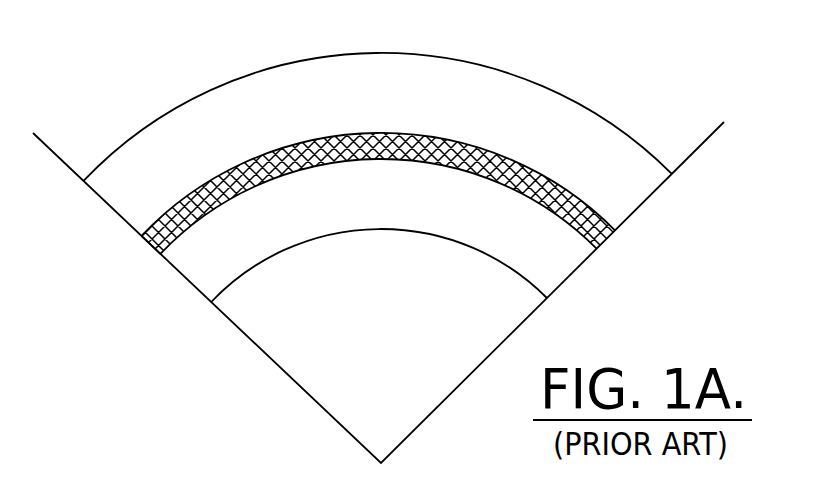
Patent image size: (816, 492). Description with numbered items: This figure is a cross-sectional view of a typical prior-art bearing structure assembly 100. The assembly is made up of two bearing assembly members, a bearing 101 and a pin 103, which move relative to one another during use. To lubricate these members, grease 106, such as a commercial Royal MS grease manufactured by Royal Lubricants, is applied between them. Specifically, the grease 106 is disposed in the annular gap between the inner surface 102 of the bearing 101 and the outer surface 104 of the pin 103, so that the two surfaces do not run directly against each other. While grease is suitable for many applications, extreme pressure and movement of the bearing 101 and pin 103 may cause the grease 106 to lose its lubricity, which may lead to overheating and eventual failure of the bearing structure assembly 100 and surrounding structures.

The bearing structure assembly 100 is at (378, 236).
The bearing 101 is at (358, 149).
The inner surface of the bearing 102 is at (373, 190).
The pin 103 is at (327, 274).
The outer surface of the pin 104 is at (379, 184).
The grease 106 is at (119, 262).